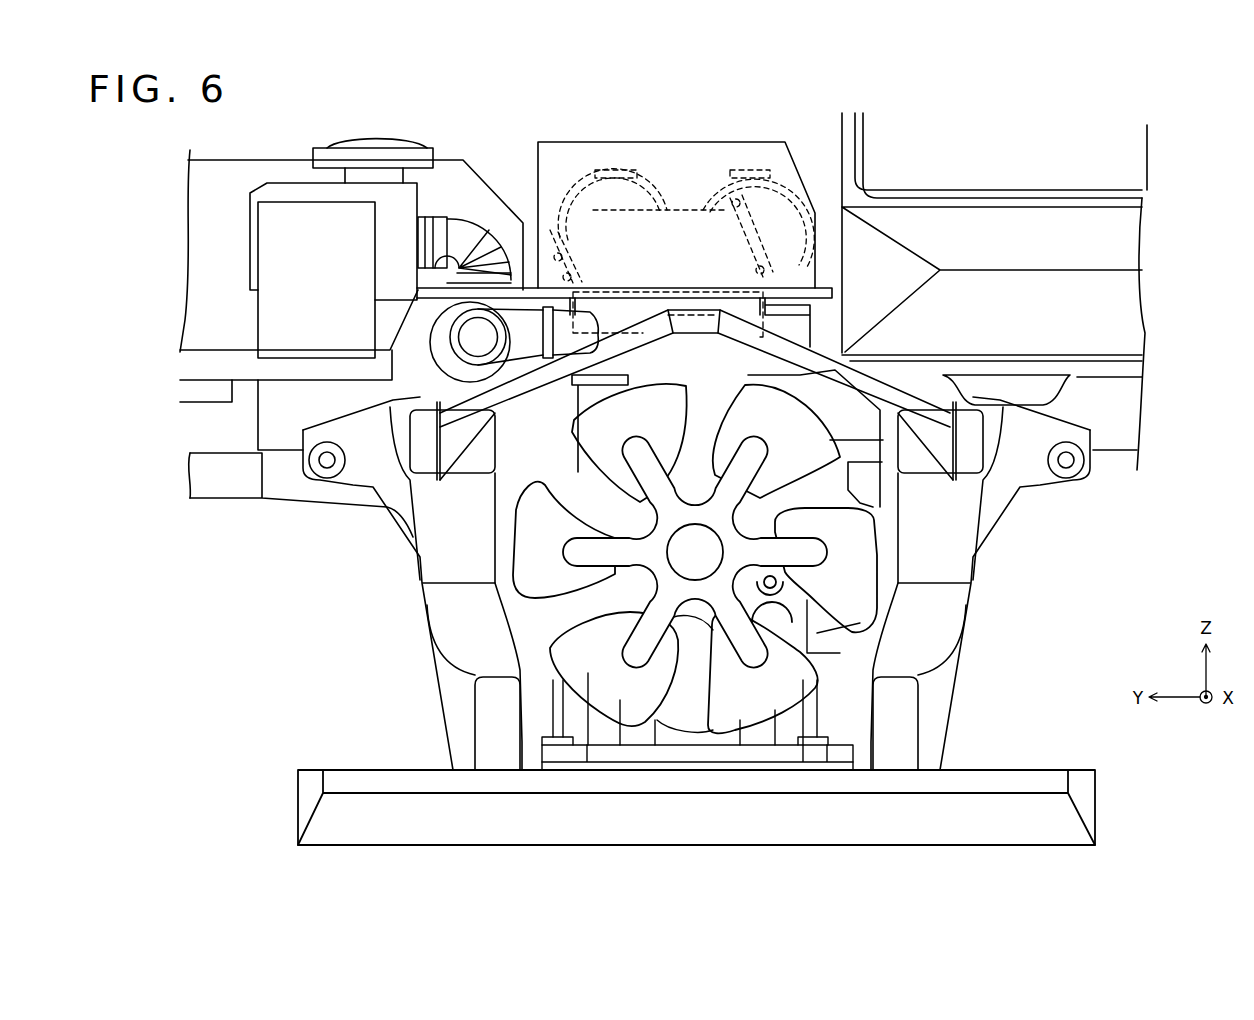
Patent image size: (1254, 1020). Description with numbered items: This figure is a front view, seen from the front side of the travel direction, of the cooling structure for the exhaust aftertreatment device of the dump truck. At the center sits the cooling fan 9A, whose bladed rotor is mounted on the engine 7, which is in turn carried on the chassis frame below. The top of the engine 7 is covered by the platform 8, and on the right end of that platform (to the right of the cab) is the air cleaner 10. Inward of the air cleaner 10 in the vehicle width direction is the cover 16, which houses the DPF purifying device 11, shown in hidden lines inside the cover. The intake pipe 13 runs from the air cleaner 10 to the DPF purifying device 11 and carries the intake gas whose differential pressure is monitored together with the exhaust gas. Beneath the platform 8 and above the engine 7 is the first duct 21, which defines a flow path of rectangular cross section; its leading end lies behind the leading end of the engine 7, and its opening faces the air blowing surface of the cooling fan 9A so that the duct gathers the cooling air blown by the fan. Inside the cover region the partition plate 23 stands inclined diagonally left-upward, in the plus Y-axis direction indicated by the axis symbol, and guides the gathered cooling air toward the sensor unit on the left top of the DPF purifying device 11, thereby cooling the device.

The engine 7 is at (870, 420).
The platform 8 is at (493, 257).
The cooling fan 9A is at (732, 710).
The air cleaner 10 is at (372, 138).
The DPF purifying device 11 is at (640, 175).
The intake pipe 13 is at (560, 340).
The cover 16 is at (700, 142).
The first duct 21 is at (763, 337).
The partition plate 23 is at (722, 180).